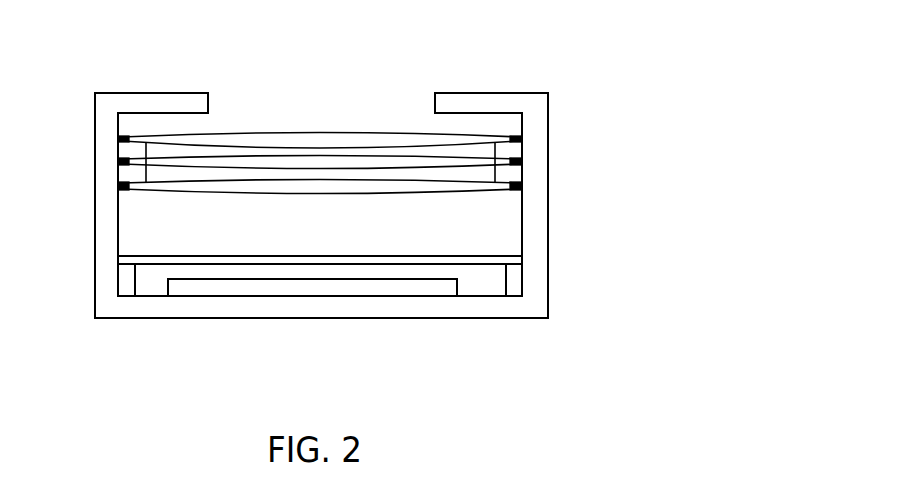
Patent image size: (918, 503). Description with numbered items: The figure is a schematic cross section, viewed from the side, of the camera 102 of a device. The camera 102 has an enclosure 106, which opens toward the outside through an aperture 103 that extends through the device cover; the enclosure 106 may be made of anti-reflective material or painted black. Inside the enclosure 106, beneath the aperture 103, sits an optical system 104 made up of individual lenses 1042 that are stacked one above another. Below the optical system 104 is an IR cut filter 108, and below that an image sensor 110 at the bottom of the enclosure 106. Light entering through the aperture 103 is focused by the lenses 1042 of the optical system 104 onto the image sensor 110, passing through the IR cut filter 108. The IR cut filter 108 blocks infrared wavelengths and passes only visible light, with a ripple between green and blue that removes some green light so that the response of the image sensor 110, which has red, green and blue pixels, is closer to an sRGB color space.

The camera 102 is at (553, 70).
The aperture 103 is at (373, 90).
The optical system 104 is at (270, 154).
The individual lenses 1042 is at (165, 194).
The enclosure 106 is at (538, 163).
The IR cut filter 108 is at (513, 262).
The image sensor 110 is at (400, 287).